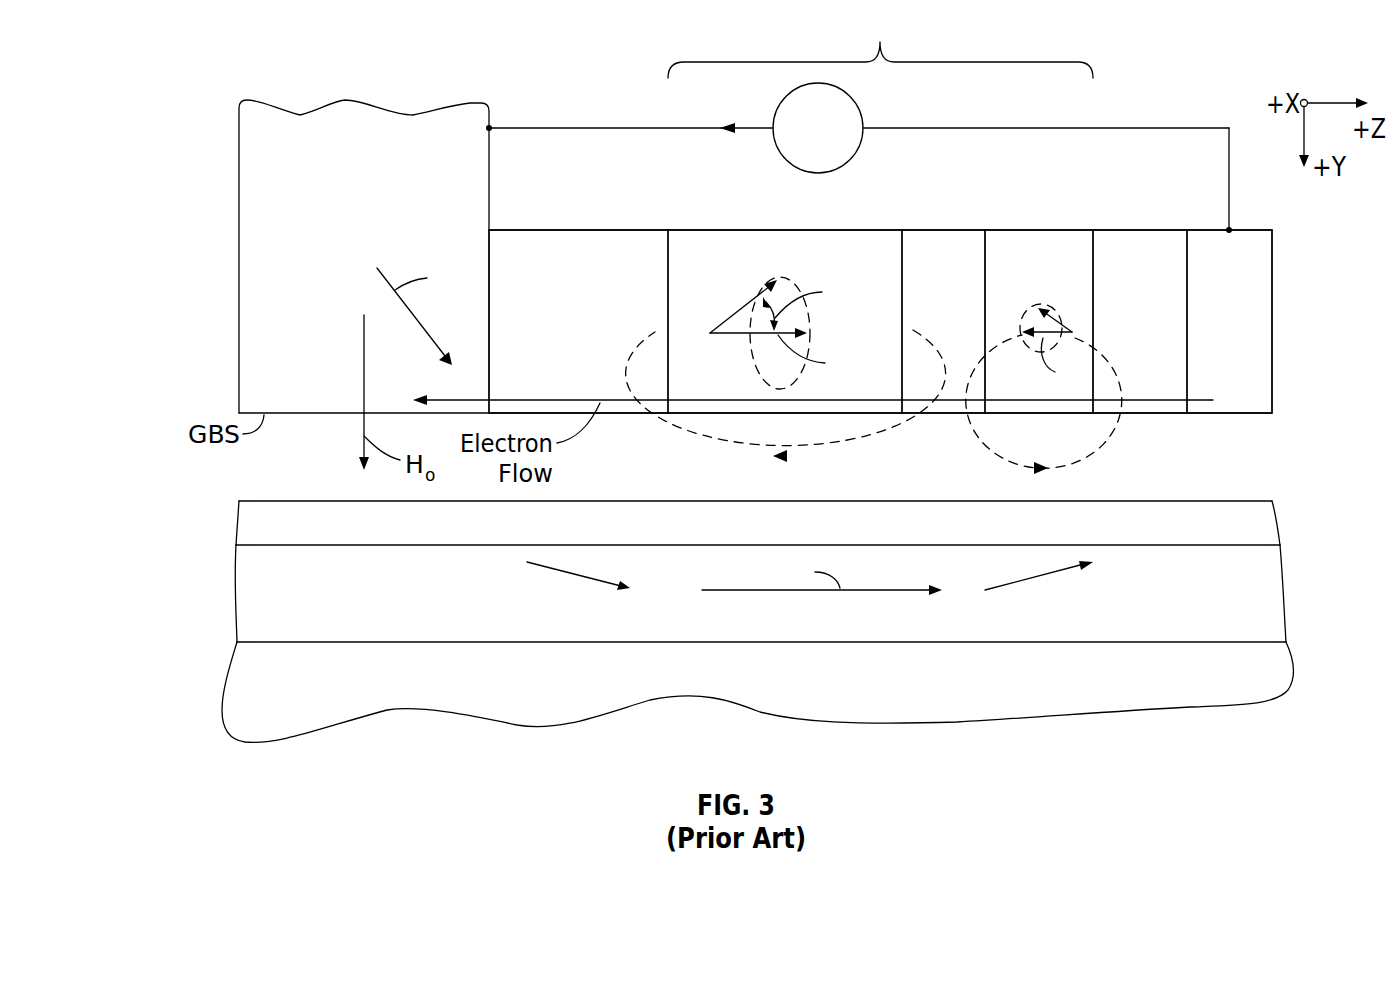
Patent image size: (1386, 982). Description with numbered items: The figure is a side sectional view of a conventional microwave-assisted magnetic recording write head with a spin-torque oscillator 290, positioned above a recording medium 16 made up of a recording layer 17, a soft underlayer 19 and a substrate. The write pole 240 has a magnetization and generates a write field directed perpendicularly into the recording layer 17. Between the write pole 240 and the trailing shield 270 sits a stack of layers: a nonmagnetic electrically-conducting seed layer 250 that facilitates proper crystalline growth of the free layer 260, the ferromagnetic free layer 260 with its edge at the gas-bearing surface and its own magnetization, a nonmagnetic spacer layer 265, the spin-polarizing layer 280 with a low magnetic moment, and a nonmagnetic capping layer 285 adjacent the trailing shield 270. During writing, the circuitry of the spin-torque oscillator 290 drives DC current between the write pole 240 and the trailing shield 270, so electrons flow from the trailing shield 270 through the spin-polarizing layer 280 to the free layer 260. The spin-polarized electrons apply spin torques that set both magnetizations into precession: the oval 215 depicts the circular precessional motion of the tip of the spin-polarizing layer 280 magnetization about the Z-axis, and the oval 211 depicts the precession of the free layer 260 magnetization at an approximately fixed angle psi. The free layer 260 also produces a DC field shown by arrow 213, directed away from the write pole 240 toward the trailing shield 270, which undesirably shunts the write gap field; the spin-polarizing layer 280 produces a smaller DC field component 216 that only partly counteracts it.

The magnetic recording medium 16 is at (736, 637).
The recording layer 17 is at (1255, 525).
The soft underlayer 19 is at (1253, 598).
The oval 211 is at (755, 357).
The DC field arrow 213 is at (712, 450).
The oval 215 is at (1032, 357).
The DC field component 216 is at (1090, 460).
The write pole 240 is at (256, 190).
The seed layer 250 is at (580, 229).
The free layer 260 is at (788, 229).
The nonmagnetic spacer layer 265 is at (942, 229).
The trailing shield 270 is at (1213, 229).
The spin-polarizing layer 280 is at (1042, 229).
The capping layer 285 is at (1140, 229).
The spin-torque oscillator 290 is at (859, 122).